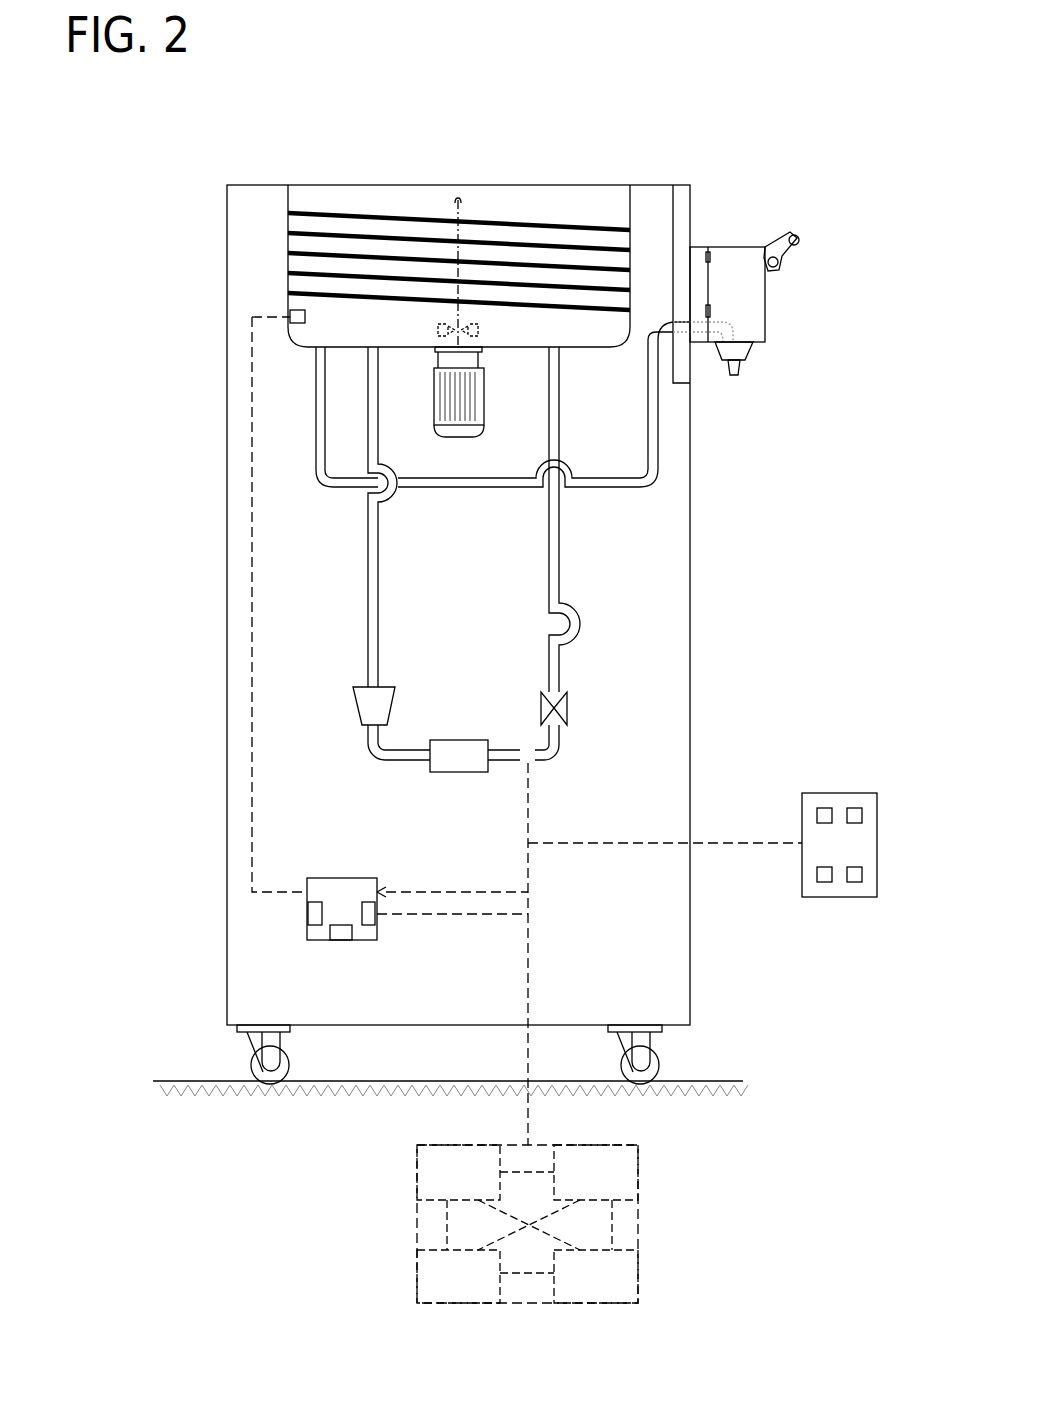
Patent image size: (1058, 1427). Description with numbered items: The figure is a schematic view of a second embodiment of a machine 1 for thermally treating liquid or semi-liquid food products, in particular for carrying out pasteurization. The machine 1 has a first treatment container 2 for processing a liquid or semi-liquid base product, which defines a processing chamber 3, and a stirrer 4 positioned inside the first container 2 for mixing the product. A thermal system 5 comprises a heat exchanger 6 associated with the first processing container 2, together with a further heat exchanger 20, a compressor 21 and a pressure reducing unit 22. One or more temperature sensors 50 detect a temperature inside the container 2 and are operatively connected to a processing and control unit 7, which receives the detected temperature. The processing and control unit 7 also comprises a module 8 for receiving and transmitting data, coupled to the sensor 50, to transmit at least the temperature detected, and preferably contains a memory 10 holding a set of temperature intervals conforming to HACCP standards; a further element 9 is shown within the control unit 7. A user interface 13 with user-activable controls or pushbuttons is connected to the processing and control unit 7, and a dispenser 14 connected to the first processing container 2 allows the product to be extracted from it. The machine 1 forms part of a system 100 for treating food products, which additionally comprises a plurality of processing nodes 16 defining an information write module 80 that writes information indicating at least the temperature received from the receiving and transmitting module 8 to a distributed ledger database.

The machine 1 is at (472, 558).
The first treatment container 2 is at (524, 166).
The processing chamber 3 is at (334, 174).
The stirrer 4 is at (435, 317).
The thermal system 5 is at (345, 601).
The heat exchanger 6 is at (308, 190).
The processing and control unit 7 is at (343, 888).
The module for receiving and transmitting data 8 is at (388, 929).
The memory / processing unit 9 is at (339, 954).
The memory 10 is at (291, 930).
The user interface 13 is at (827, 775).
The dispenser 14 is at (795, 308).
The processing nodes 16 is at (586, 1286).
The further heat exchanger 20 is at (456, 731).
The compressor 21 is at (341, 716).
The pressure reducing unit 22 is at (590, 704).
The temperature sensors 50 is at (280, 304).
The information write module 80 is at (629, 1286).
The system 100 is at (650, 1226).